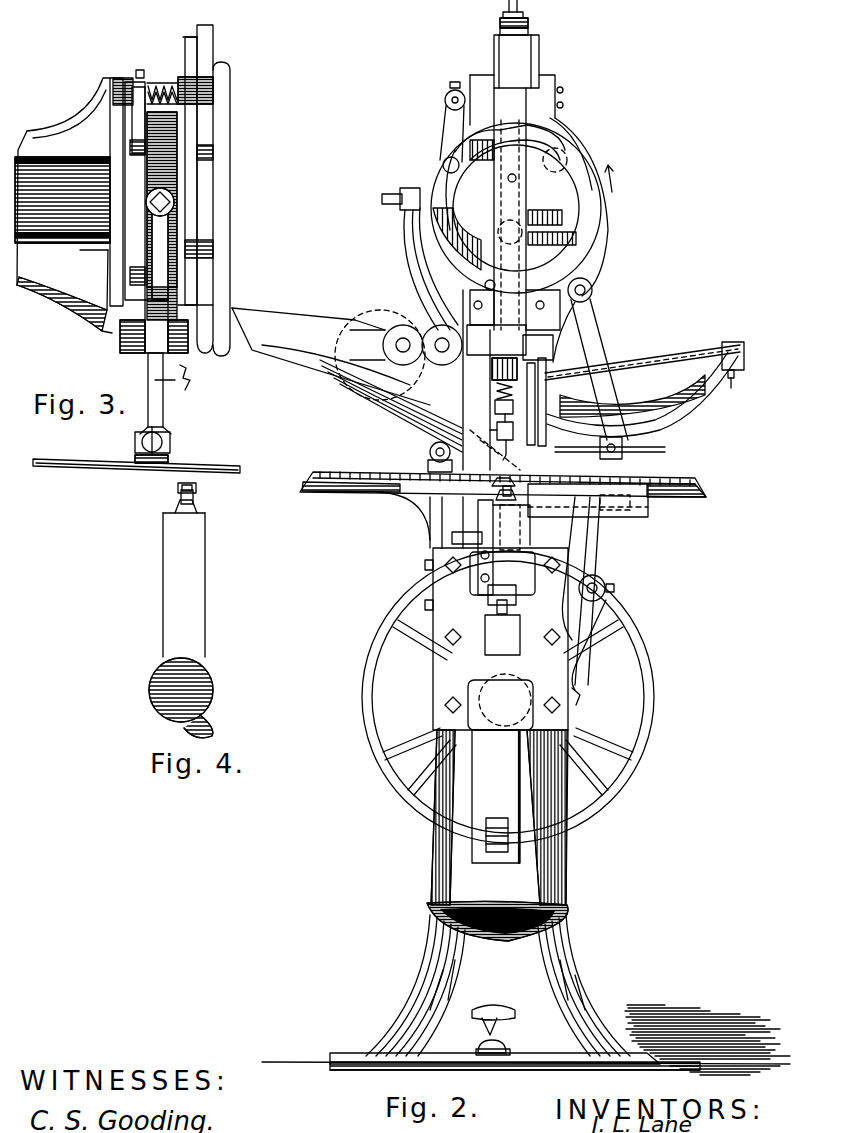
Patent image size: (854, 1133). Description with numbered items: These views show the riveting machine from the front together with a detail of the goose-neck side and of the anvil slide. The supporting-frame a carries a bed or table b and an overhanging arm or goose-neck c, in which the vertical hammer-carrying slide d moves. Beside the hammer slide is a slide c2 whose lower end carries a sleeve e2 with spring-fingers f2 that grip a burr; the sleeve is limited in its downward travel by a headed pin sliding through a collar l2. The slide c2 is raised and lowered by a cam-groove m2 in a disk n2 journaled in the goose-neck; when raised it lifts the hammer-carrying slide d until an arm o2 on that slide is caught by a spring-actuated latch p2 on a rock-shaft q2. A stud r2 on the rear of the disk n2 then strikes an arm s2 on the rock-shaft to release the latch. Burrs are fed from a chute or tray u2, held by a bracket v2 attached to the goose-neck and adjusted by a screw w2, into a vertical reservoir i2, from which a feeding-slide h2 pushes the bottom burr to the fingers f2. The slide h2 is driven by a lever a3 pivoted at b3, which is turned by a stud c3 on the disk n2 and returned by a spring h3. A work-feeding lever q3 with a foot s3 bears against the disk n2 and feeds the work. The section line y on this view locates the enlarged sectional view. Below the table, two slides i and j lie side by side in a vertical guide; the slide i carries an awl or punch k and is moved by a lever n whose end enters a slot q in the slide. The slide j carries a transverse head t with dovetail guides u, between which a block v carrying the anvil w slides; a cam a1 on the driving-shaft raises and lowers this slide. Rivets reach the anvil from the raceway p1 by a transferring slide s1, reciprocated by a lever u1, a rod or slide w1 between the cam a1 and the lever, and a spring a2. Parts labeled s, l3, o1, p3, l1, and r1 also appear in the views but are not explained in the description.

In FIG. 2, the spool nut s is at (528, 24).
In FIG. 2, the hammer-carrying slide d is at (517, 58).
In FIG. 3, the stud c3 is at (63, 205).
In FIG. 2, the stud c3 is at (570, 152).
In FIG. 3, the overhanging arm or goose-neck c is at (67, 271).
In FIG. 3, the disk n2 is at (161, 232).
In FIG. 2, the disk n2 is at (440, 168).
In FIG. 2, the section line y y is at (499, 475).
In FIG. 2, the arm o2 is at (480, 148).
In FIG. 3, the rock-shaft q2 is at (180, 82).
In FIG. 2, the rock-shaft q2 is at (446, 100).
In FIG. 3, the spring-actuated latch p2 is at (205, 118).
In FIG. 2, the spring-actuated latch p2 is at (448, 136).
In FIG. 3, the collar l2 is at (152, 84).
In FIG. 2, the adjusting block l3 is at (420, 196).
In FIG. 2, the cam-groove m2 is at (450, 248).
In FIG. 3, the work-feeding lever q3 is at (160, 377).
In FIG. 2, the work-feeding lever q3 is at (412, 284).
In FIG. 3, the stud r2 is at (130, 276).
In FIG. 2, the stud r2 is at (485, 288).
In FIG. 3, the arm s2 is at (132, 117).
In FIG. 2, the arm s2 is at (512, 398).
In FIG. 2, the pivot b3 is at (592, 290).
In FIG. 2, the lever a3 is at (590, 250).
In FIG. 2, the spring h3 is at (568, 332).
In FIG. 2, the chute or tray u2 is at (644, 351).
In FIG. 2, the screw w2 is at (735, 376).
In FIG. 2, the bracket v2 is at (688, 400).
In FIG. 2, the vertical reservoir i2 is at (545, 410).
In FIG. 2, the slide c2 is at (492, 368).
In FIG. 2, the sleeve e2 is at (497, 430).
In FIG. 2, the spring-fingers f2 is at (506, 452).
In FIG. 2, the feeding-slide h2 is at (578, 452).
In FIG. 2, the handle plate o1 is at (331, 356).
In FIG. 2, the pulleys p3 is at (440, 352).
In FIG. 2, the raceway p1 is at (410, 412).
In FIG. 3, the foot s3 is at (170, 459).
In FIG. 2, the foot s3 is at (430, 456).
In FIG. 4, the anvil w is at (198, 486).
In FIG. 2, the anvil w is at (515, 474).
In FIG. 3, the bed or table b is at (212, 466).
In FIG. 2, the bed or table b is at (665, 480).
In FIG. 2, the slide block l1 is at (650, 512).
In FIG. 2, the awl or punch k is at (500, 605).
In FIG. 4, the transverse head t is at (175, 528).
In FIG. 2, the transverse head t is at (515, 536).
In FIG. 4, the dovetail guides u is at (175, 508).
In FIG. 2, the dovetail guides u is at (492, 496).
In FIG. 4, the block v is at (193, 500).
In FIG. 2, the block v is at (511, 496).
In FIG. 2, the transferring slide s1 is at (630, 510).
In FIG. 2, the spring a2 is at (595, 545).
In FIG. 2, the roller r1 is at (606, 585).
In FIG. 2, the lever u1 is at (602, 620).
In FIG. 2, the rod or slide w1 is at (582, 698).
In FIG. 4, the cam a1 is at (212, 680).
In FIG. 2, the cam a1 is at (500, 671).
In FIG. 2, the supporting-frame a is at (508, 697).
In FIG. 2, the awl-carrying slide i is at (465, 760).
In FIG. 2, the slot q is at (508, 836).
In FIG. 2, the lever n is at (486, 835).
In FIG. 4, the anvil-carrying slide j is at (168, 588).